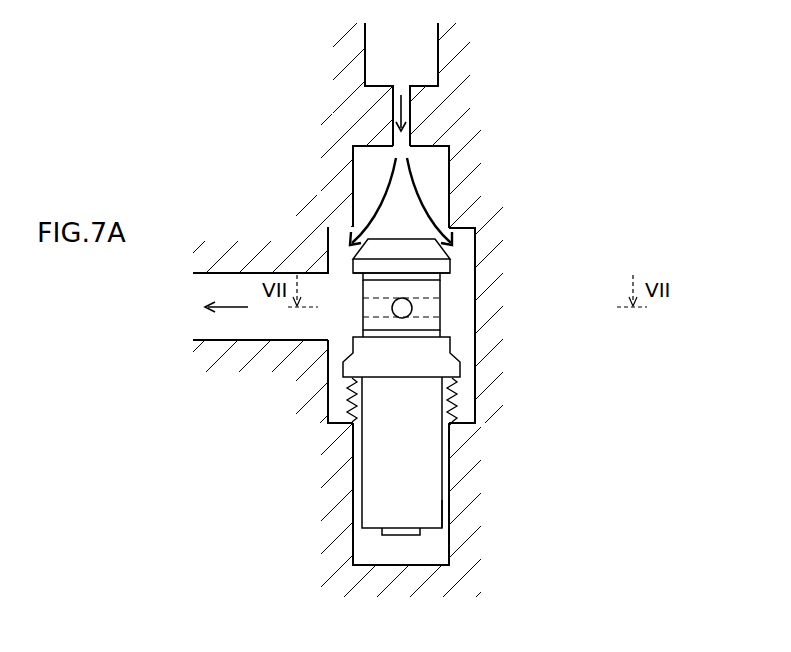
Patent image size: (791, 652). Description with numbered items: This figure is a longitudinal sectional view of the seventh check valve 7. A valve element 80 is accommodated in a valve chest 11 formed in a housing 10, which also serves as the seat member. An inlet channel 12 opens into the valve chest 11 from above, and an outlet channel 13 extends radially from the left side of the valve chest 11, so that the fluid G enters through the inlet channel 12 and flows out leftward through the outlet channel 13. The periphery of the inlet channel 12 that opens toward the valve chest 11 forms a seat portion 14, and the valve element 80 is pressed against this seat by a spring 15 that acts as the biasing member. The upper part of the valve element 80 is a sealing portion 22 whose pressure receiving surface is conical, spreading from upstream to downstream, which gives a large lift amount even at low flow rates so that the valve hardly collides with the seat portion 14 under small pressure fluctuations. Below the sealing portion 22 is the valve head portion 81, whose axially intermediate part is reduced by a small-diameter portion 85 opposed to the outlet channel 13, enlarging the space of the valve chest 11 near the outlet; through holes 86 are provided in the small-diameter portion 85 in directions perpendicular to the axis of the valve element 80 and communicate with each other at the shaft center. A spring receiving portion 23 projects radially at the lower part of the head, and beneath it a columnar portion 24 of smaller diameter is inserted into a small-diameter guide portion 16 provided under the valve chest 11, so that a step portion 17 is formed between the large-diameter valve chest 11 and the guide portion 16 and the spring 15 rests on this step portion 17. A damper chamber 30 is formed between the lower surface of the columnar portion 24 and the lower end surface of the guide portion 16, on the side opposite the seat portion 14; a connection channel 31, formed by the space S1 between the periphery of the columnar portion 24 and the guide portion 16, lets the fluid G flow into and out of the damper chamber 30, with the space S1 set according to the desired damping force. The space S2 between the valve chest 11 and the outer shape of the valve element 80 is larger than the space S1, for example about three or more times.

The seventh check valve 7 is at (590, 174).
The housing 10 is at (531, 362).
The valve chest 11 is at (455, 296).
The inlet channel 12 is at (418, 177).
The outlet channel 13 is at (253, 288).
The seat portion 14 is at (435, 203).
The spring 15 is at (462, 411).
The guide portion 16 is at (367, 558).
The step portion 17 is at (335, 405).
The sealing portion 22 is at (447, 252).
The spring receiving portion 23 is at (457, 392).
The columnar portion 24 is at (410, 472).
The damper chamber 30 is at (418, 547).
The connection channel 31 is at (452, 515).
The valve element 80 is at (380, 428).
The valve head portion 81 is at (445, 268).
The small-diameter portion 85 is at (442, 325).
The through holes 86 is at (392, 302).
The fluid G is at (370, 215).
The space S1 is at (424, 453).
The space S2 is at (345, 347).